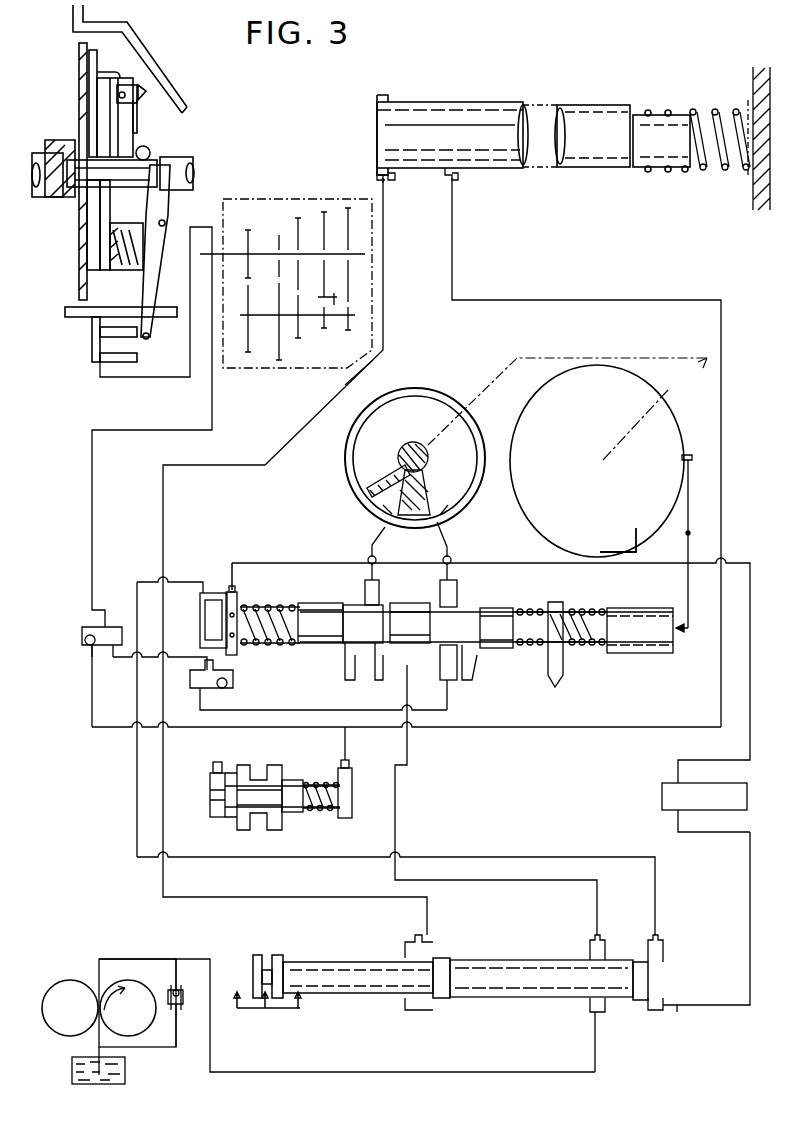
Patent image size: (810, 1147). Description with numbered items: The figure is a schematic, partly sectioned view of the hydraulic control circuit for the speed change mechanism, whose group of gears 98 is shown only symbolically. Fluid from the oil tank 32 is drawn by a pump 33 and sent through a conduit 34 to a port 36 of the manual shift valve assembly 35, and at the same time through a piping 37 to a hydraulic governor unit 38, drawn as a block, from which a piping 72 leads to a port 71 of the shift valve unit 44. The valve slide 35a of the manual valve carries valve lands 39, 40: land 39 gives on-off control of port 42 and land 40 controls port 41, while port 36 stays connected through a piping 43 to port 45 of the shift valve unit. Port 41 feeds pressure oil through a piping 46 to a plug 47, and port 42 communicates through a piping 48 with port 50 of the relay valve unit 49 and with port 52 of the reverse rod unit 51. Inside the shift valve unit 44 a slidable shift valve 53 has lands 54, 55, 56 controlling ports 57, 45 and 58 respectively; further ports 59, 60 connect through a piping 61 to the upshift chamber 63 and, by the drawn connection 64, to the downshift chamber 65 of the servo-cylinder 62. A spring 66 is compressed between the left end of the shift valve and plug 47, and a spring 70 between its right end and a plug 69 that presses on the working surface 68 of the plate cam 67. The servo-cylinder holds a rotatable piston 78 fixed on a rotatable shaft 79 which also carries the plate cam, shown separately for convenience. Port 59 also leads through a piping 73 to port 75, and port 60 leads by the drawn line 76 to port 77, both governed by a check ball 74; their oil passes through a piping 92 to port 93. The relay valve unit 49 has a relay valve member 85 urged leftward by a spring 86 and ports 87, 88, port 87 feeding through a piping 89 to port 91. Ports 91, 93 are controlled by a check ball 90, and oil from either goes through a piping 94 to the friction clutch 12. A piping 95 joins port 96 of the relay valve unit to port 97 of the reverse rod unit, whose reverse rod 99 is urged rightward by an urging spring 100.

The friction clutch 12 is at (68, 272).
The oil tank 32 is at (125, 1068).
The pump 33 is at (70, 988).
The conduit 34 is at (275, 1075).
The shift valve assembly 35 is at (537, 997).
The valve slide 35a is at (520, 970).
The port 36 is at (585, 1008).
The piping 37 is at (748, 898).
The hydraulic governor unit 38 is at (662, 797).
The valve land 39 is at (440, 1000).
The valve land 40 is at (650, 1012).
The port 41 is at (660, 948).
The port 42 is at (433, 945).
The piping 43 is at (395, 808).
The shift valve unit 44 is at (507, 642).
The port 45 is at (380, 690).
The piping 46 is at (137, 815).
The plug 47 is at (200, 624).
The piping 48 is at (383, 262).
The relay valve unit 49 is at (368, 786).
The port 50 is at (210, 780).
The reverse rod unit 51 is at (530, 86).
The port 52 is at (385, 183).
The shift valve 53 is at (490, 620).
The land 54 is at (318, 603).
The land 55 is at (405, 603).
The land 56 is at (556, 605).
The port 57 is at (346, 672).
The port 58 is at (470, 670).
The port 59 is at (365, 598).
The port 60 is at (457, 590).
The piping 61 is at (375, 548).
The servo-cylinder 62 is at (440, 402).
The upshift chamber 63 is at (378, 510).
The conduit 64 is at (449, 550).
The downshift chamber 65 is at (455, 510).
The spring 66 is at (270, 645).
The plate cam 67 is at (676, 383).
The working surface 68 is at (665, 520).
The plug 69 is at (640, 653).
The spring 70 is at (568, 645).
The port 71 is at (237, 597).
The piping 72 is at (750, 560).
The piping 73 is at (285, 727).
The check ball 74 is at (227, 680).
The port 75 is at (222, 690).
The conduit 76 is at (318, 727).
The port 77 is at (187, 685).
The rotatable piston 78 is at (382, 488).
The rotatable shaft 79 is at (428, 452).
The relay valve member 85 is at (290, 812).
The spring 86 is at (335, 810).
The port 87 is at (240, 812).
The port 88 is at (270, 830).
The piping 89 is at (105, 728).
The check ball 90 is at (84, 636).
The port 91 is at (86, 645).
The piping 92 is at (127, 660).
The port 93 is at (95, 655).
The piping 94 is at (212, 385).
The piping 95 is at (562, 300).
The port 96 is at (338, 770).
The port 97 is at (455, 183).
The group of gears 98 is at (313, 180).
The reverse rod 99 is at (478, 115).
The urging spring 100 is at (703, 170).